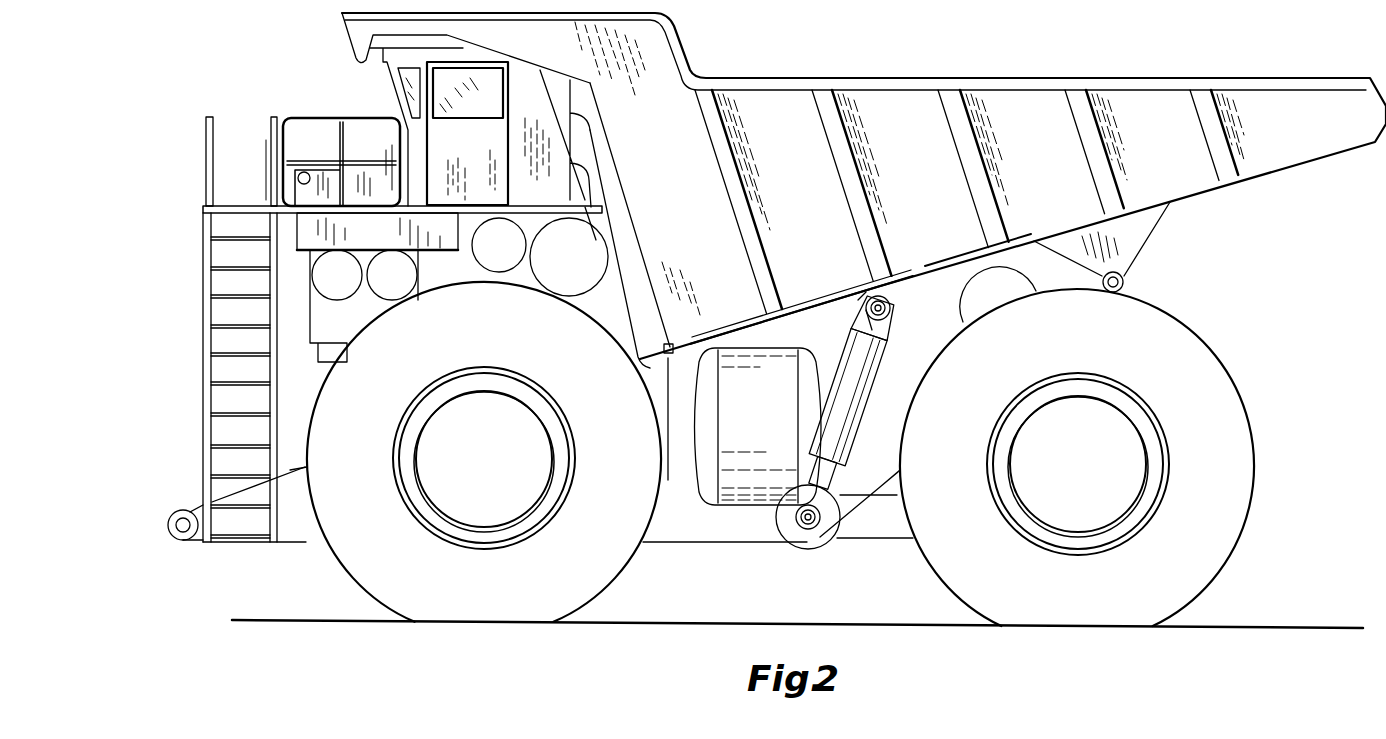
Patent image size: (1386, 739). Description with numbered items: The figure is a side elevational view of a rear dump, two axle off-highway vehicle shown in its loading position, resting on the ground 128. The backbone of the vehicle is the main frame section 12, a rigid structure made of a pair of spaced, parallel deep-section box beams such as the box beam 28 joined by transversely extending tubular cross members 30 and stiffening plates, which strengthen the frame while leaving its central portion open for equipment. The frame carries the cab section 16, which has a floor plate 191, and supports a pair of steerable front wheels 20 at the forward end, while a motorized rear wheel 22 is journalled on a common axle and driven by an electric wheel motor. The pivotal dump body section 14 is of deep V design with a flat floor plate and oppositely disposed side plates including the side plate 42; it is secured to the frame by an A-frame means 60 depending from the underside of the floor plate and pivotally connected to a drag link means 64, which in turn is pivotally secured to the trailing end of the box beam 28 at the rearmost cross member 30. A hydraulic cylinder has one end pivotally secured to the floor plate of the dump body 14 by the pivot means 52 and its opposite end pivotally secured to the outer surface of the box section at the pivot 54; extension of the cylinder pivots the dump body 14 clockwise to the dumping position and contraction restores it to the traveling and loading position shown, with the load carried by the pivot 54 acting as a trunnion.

The main frame section 12 is at (673, 523).
The dump body section 14 is at (864, 190).
The cab section 16 is at (558, 157).
The front wheels 20 is at (563, 593).
The rear wheel 22 is at (1143, 617).
The box beam 28 is at (883, 430).
The tubular cross members 30 is at (1010, 295).
The side plate 42 is at (814, 230).
The pivot means 52 is at (880, 294).
The pivot 54 is at (808, 533).
The A-frame means 60 is at (1130, 242).
The drag link means 64 is at (1063, 278).
The ground 128 is at (1251, 626).
The floor plate of the cab section 191 is at (255, 200).